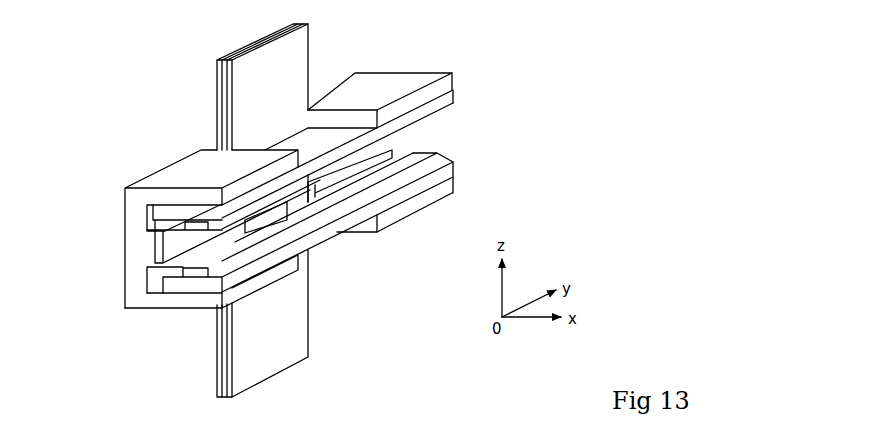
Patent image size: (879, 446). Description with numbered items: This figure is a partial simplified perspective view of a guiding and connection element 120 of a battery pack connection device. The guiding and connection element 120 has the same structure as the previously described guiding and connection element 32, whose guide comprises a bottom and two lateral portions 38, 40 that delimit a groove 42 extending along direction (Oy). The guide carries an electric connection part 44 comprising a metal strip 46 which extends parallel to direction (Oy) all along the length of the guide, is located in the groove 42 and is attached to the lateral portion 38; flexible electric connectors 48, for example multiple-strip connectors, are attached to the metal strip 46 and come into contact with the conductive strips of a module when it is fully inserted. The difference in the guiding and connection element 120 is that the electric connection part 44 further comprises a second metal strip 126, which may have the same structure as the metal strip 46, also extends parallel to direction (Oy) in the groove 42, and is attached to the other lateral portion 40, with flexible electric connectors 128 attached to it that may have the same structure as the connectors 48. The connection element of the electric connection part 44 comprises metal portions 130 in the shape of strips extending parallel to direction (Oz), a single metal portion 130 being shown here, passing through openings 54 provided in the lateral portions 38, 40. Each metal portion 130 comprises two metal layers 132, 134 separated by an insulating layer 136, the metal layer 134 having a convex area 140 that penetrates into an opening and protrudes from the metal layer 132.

The metal portion 130 is at (312, 25).
The metal layer 132 is at (300, 71).
The metal layer 134 is at (218, 110).
The insulating layer 136 is at (217, 78).
The guiding and connection element 32 is at (140, 171).
The lateral portion 40 is at (170, 300).
The groove 42 is at (153, 250).
The flexible electric connectors 48 is at (197, 225).
The electric connection part 44 is at (460, 97).
The metal strip 46 is at (427, 113).
The guiding and connection element 120 is at (432, 67).
The lateral portion 38 is at (400, 83).
The openings 54 is at (368, 112).
The flexible electric connectors 128 is at (200, 282).
The metal strip 126 is at (452, 168).
The convex area 140 is at (272, 217).